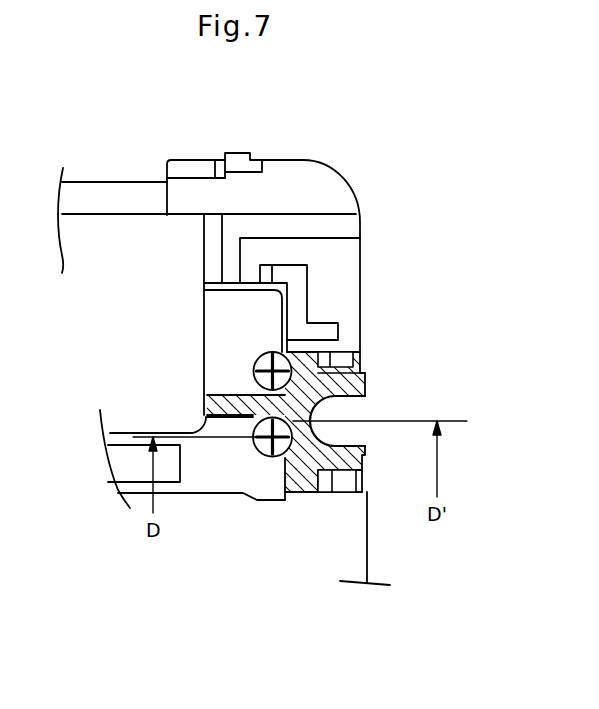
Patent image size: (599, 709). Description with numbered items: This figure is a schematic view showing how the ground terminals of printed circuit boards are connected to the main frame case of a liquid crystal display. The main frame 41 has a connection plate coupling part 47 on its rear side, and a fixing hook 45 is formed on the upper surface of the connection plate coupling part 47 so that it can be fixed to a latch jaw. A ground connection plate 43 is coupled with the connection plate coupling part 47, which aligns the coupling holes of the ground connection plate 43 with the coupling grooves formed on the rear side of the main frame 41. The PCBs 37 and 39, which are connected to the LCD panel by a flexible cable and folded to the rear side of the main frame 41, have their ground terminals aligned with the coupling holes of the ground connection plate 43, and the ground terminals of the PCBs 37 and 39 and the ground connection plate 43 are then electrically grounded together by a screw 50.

The PCB 37 is at (277, 557).
The PCB 39 is at (103, 237).
The main frame 41 is at (340, 260).
The ground connection plate 43 is at (357, 380).
The fixing hook 45 is at (343, 362).
The connection plate coupling part 47 is at (357, 397).
The screw 50 is at (288, 357).